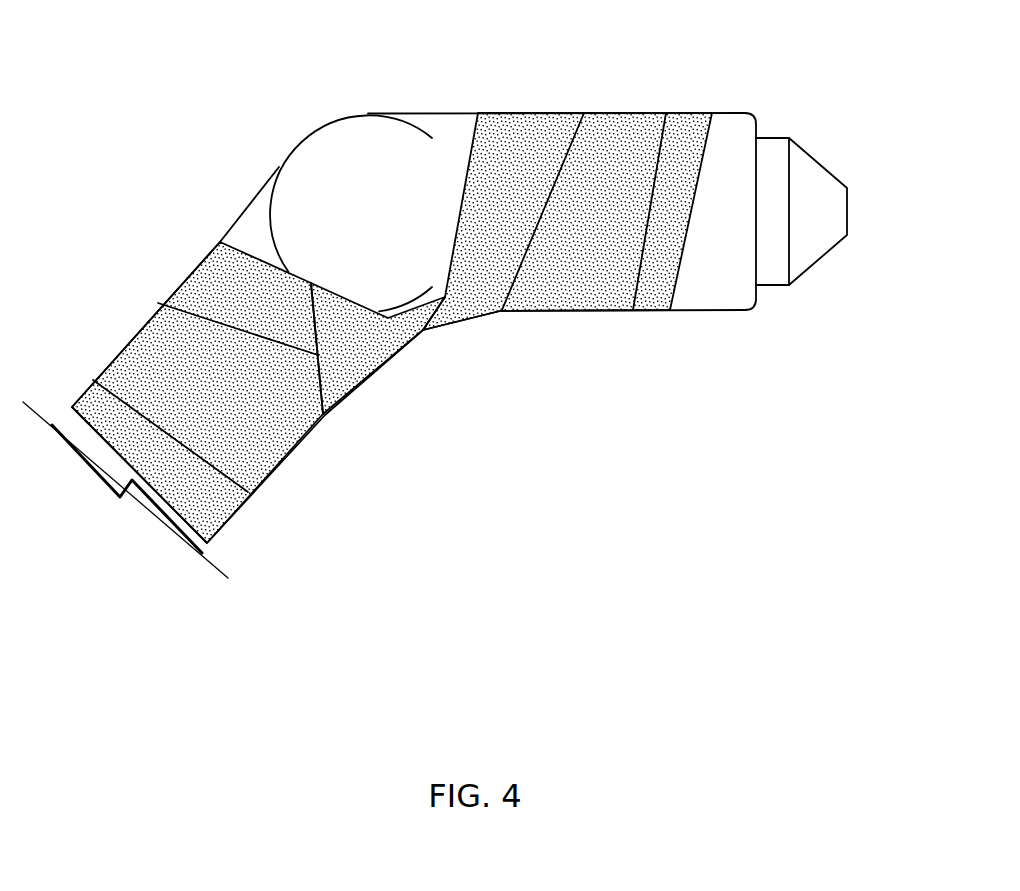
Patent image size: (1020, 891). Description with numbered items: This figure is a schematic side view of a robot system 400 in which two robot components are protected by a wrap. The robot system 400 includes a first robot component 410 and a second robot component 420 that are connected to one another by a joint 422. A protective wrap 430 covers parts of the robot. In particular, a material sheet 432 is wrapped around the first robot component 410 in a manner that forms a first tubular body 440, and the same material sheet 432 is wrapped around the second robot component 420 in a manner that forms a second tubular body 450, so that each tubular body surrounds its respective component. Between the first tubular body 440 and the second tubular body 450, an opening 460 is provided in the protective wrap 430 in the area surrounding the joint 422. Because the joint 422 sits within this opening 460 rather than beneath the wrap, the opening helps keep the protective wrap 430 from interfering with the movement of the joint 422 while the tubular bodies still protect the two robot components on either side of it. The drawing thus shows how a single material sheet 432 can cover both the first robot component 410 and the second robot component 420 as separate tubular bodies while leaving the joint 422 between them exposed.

The robot system 400 is at (435, 337).
The first robot component 410 is at (585, 362).
The second robot component 420 is at (345, 498).
The joint 422 is at (388, 234).
The protective wrap 430 is at (278, 470).
The material sheet 432 is at (343, 363).
The first tubular body 440 is at (473, 72).
The second tubular body 450 is at (188, 223).
The opening 460 is at (292, 88).